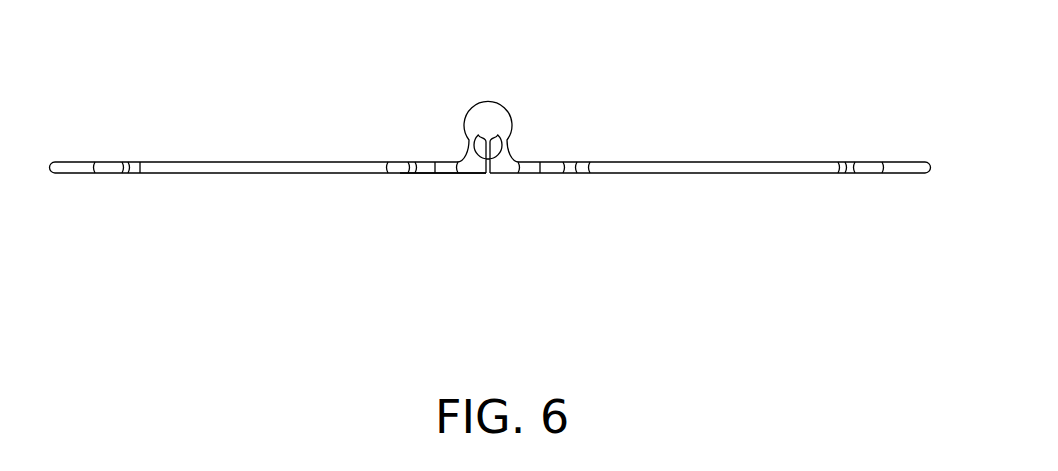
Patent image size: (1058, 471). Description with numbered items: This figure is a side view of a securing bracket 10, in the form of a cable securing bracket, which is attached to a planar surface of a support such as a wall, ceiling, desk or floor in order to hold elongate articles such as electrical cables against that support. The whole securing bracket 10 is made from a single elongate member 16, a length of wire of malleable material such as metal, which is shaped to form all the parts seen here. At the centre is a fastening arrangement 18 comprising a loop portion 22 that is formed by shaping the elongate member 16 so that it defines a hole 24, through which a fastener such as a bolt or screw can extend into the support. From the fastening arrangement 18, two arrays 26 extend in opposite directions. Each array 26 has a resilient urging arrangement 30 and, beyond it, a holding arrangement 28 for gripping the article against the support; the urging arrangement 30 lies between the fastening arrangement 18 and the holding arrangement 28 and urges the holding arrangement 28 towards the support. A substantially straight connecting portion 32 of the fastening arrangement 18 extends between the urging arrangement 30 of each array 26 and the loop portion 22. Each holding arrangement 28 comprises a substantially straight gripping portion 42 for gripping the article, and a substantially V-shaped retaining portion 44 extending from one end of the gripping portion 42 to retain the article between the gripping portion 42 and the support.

The securing bracket 10 is at (488, 140).
The elongate member 16 is at (427, 178).
The fastening arrangement 18 is at (482, 119).
The loop portion 22 is at (475, 108).
The hole 24 is at (488, 130).
The arrays 26 is at (176, 158).
The holding arrangement 28 is at (215, 178).
The resilient urging arrangement 30 is at (427, 158).
The connecting portion 32 is at (452, 161).
The gripping portion 42 is at (253, 174).
The retaining portion 44 is at (63, 158).